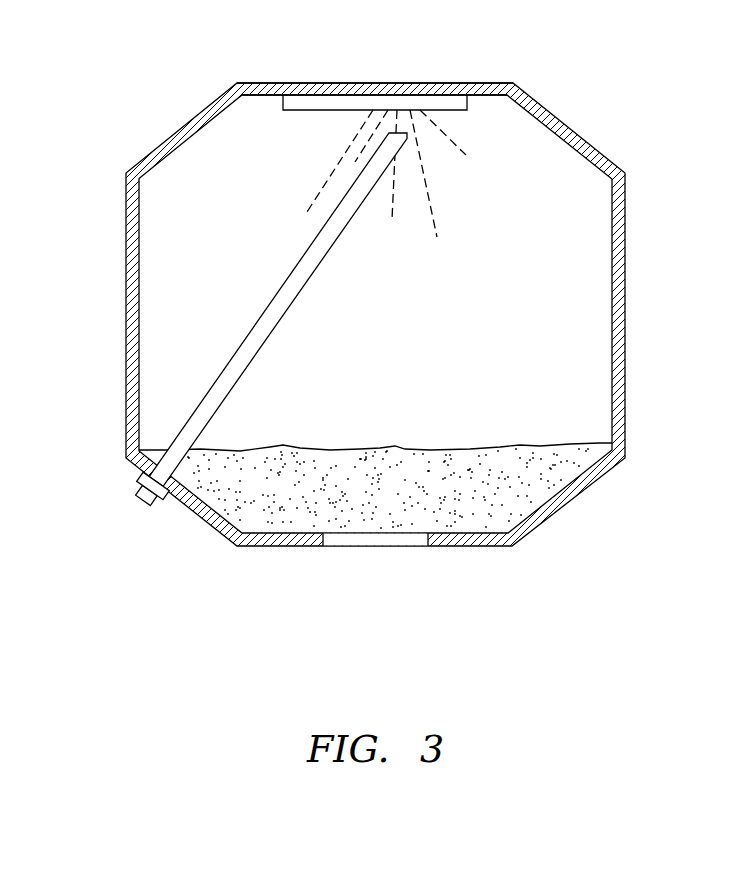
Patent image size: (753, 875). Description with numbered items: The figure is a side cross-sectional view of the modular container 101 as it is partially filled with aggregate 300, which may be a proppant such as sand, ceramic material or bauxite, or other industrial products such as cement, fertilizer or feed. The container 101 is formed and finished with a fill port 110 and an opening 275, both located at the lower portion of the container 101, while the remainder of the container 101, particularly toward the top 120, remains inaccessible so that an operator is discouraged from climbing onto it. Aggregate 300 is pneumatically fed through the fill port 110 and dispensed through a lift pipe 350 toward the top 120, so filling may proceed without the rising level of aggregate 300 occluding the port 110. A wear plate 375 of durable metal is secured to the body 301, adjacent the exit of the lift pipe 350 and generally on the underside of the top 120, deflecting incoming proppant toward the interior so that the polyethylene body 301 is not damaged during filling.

The modular container 101 is at (130, 104).
The fill port 110 is at (143, 497).
The top 120 is at (443, 83).
The opening 275 is at (354, 558).
The aggregate 300 is at (420, 152).
The body 301 is at (590, 150).
The lift pipe 350 is at (242, 350).
The wear plate 375 is at (332, 103).